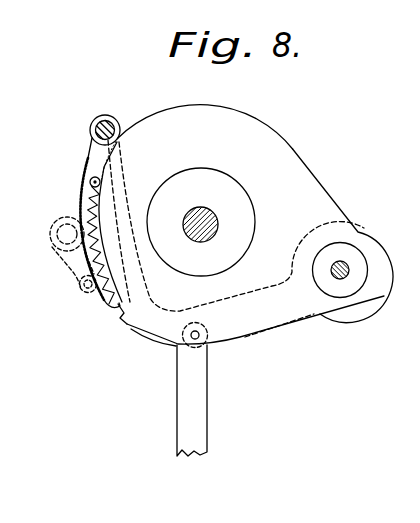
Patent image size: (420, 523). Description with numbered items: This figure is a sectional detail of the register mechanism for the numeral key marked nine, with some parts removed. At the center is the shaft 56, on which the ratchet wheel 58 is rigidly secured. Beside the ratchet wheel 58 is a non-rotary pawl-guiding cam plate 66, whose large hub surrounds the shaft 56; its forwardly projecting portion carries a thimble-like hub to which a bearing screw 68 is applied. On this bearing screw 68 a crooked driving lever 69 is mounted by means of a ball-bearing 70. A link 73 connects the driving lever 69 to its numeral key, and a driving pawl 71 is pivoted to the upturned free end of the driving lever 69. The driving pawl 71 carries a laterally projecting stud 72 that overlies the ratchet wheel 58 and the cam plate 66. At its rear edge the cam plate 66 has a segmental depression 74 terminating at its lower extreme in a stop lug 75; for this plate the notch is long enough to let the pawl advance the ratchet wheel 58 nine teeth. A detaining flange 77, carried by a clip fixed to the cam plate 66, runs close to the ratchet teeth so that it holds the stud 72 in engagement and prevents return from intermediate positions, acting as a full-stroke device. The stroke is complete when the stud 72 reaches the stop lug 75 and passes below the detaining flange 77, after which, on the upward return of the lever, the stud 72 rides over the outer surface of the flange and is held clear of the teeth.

The shaft 56 is at (217, 213).
The ratchet wheel 58 is at (116, 304).
The pawl-guiding cam plate 66 is at (296, 212).
The bearing screw 68 is at (343, 266).
The driving lever 69 is at (171, 344).
The ball-bearing 70 is at (354, 293).
The driving pawl 71 is at (100, 148).
The stud 72 is at (89, 183).
The link 73 is at (193, 437).
The segmental depression 74 is at (93, 221).
The stop lug 75 is at (121, 316).
The detaining flange 77 is at (80, 213).